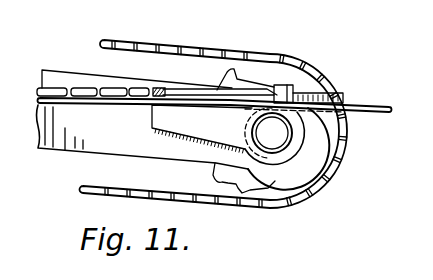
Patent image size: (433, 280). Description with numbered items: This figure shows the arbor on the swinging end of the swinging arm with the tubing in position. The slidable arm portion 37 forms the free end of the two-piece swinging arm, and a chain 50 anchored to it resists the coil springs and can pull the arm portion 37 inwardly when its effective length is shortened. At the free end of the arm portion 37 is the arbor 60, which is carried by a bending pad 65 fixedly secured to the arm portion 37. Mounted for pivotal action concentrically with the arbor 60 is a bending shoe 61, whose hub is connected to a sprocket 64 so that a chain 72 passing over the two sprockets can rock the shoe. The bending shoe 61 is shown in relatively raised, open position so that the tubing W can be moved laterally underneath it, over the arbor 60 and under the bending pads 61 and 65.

The arm portion 37 is at (60, 143).
The chain 50 is at (67, 88).
The arbor 60 is at (283, 136).
The bending shoe 61 is at (320, 93).
The sprocket 64 is at (309, 177).
The bending pad 65 is at (182, 89).
The chain 72 is at (125, 40).
The workpiece rod W is at (376, 108).